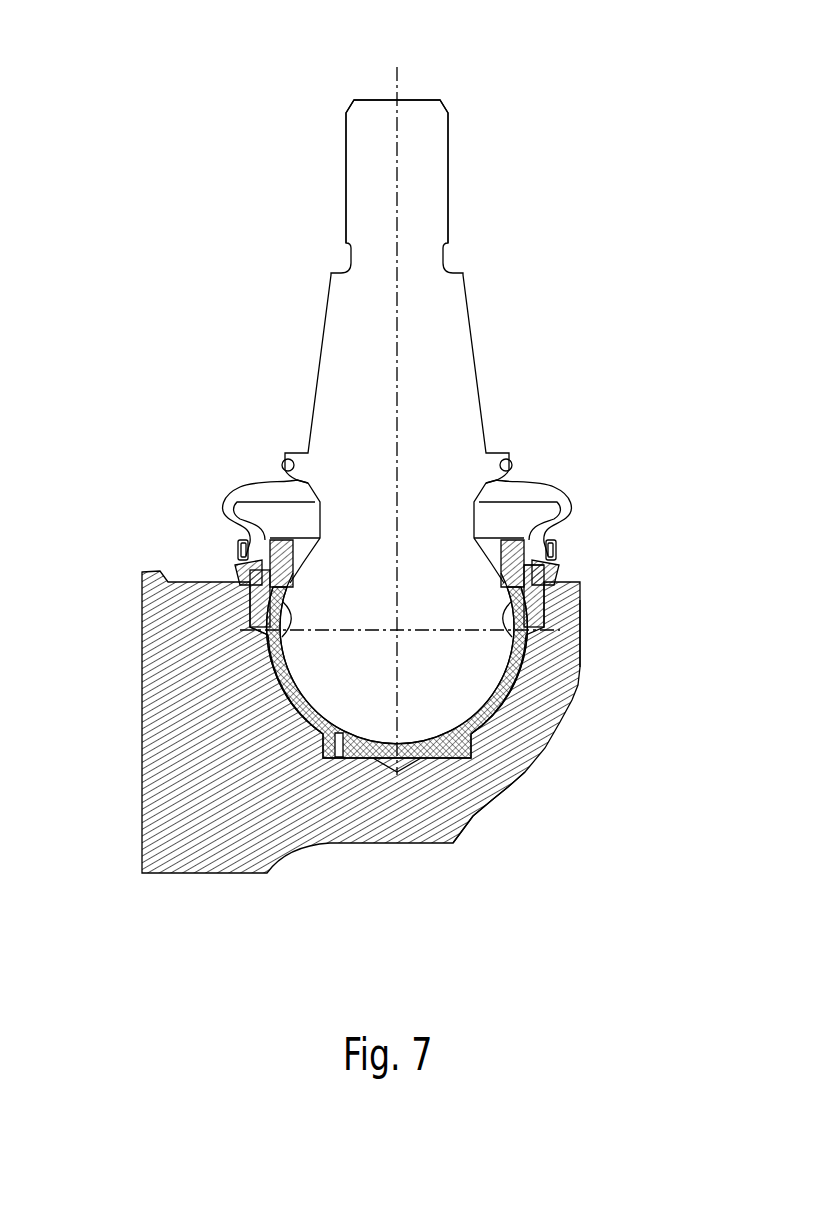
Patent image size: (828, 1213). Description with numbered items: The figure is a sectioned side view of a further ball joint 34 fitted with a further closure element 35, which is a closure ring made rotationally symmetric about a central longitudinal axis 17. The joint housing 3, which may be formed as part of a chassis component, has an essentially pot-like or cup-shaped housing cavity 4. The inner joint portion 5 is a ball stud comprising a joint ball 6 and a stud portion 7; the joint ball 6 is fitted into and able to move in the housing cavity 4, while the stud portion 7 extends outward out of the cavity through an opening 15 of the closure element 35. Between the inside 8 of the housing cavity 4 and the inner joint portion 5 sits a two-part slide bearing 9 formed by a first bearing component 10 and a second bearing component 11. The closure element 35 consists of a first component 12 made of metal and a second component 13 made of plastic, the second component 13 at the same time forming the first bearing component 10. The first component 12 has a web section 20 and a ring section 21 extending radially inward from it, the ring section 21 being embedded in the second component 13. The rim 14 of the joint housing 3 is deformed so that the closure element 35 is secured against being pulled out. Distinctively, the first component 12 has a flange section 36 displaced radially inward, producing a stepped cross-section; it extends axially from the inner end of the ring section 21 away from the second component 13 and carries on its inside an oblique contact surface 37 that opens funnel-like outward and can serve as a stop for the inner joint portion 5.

The joint housing 3 is at (547, 770).
The housing cavity 4 is at (470, 775).
The inner joint portion 5 is at (522, 370).
The joint ball 6 is at (433, 715).
The stud portion 7 is at (430, 193).
The inside of the housing cavity 8 is at (310, 713).
The two-part slide bearing 9 is at (245, 668).
The first bearing component 10 is at (283, 636).
The second bearing component 11 is at (285, 690).
The first component 12 is at (250, 577).
The second component 13 is at (527, 650).
The rim 14 is at (240, 560).
The opening 15 is at (505, 533).
The central longitudinal axis 17 is at (400, 67).
The web section 20 is at (547, 606).
The ring section 21 is at (540, 577).
The ball joint 34 is at (632, 206).
The closure element 35 is at (577, 630).
The flange section 36 is at (542, 548).
The contact surface 37 is at (275, 548).